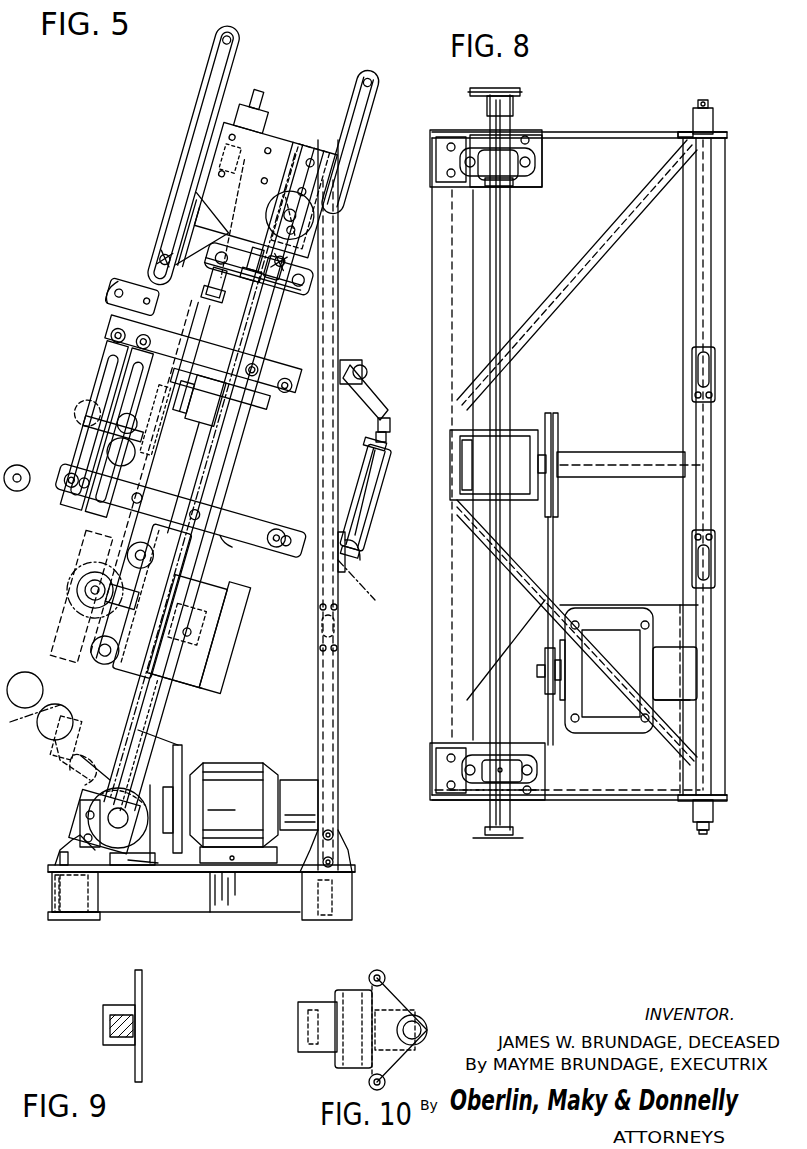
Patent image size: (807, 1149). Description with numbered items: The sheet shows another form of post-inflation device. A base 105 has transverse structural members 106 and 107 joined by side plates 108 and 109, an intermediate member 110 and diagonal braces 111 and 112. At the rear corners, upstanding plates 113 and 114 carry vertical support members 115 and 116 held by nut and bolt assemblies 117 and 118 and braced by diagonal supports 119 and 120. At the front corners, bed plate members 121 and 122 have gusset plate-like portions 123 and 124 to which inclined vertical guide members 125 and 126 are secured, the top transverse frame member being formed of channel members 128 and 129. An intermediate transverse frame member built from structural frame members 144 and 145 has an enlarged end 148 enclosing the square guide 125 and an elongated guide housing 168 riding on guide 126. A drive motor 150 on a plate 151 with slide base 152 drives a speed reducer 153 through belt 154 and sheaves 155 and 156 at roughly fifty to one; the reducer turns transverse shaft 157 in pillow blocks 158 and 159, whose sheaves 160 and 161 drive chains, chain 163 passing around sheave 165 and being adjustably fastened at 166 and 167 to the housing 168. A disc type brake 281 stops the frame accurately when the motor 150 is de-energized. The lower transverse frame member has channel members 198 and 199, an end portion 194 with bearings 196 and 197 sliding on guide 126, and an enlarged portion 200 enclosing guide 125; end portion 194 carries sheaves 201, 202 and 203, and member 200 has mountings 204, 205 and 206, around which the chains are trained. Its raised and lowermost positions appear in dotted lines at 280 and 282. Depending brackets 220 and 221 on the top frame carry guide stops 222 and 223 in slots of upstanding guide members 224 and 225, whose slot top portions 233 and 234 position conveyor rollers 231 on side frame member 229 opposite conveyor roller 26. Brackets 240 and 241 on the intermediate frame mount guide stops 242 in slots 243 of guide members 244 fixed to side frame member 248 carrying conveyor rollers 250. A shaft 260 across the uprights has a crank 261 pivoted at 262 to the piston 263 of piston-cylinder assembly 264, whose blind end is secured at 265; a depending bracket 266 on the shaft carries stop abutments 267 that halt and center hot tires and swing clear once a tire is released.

In FIG. 5, the conveyor roller 26 is at (22, 465).
In FIG. 5, the base 105 is at (213, 915).
In FIG. 5, the transverse structural member 106 is at (72, 900).
In FIG. 8, the transverse structural member 106 is at (450, 293).
In FIG. 5, the transverse structural member 107 is at (335, 897).
In FIG. 8, the transverse structural member 107 is at (705, 777).
In FIG. 8, the side plate 108 is at (612, 800).
In FIG. 8, the side plate 109 is at (598, 130).
In FIG. 8, the intermediate member 110 is at (603, 455).
In FIG. 8, the diagonal brace 111 is at (578, 272).
In FIG. 8, the diagonal brace 112 is at (545, 585).
In FIG. 8, the upstanding plate 113 is at (726, 135).
In FIG. 5, the upstanding plate 114 is at (345, 878).
In FIG. 8, the upstanding plate 114 is at (723, 798).
In FIG. 8, the upstanding vertical support member 115 is at (692, 120).
In FIG. 8, the upstanding vertical support member 116 is at (695, 820).
In FIG. 8, the nut and bolt assembly 117 is at (704, 108).
In FIG. 5, the nut and bolt assembly 118 is at (337, 860).
In FIG. 8, the nut and bolt assembly 118 is at (703, 840).
In FIG. 8, the diagonal support 119 is at (712, 307).
In FIG. 5, the diagonal support 120 is at (330, 733).
In FIG. 8, the diagonal support 120 is at (705, 657).
In FIG. 8, the bed plate member 121 is at (524, 135).
In FIG. 8, the bed plate member 122 is at (515, 800).
In FIG. 8, the gusset plate-like portion 123 is at (442, 135).
In FIG. 5, the gusset plate-like portion 124 is at (70, 848).
In FIG. 8, the gusset plate-like portion 124 is at (455, 802).
In FIG. 9, the inclined vertical guide member 125 is at (140, 1020).
In FIG. 5, the inclined vertical guide member 126 is at (168, 546).
In FIG. 5, the channel member 128 is at (222, 158).
In FIG. 5, the channel member 129 is at (308, 140).
In FIG. 5, the transversely extending structural frame member 144 is at (163, 288).
In FIG. 5, the transversely extending structural frame member 145 is at (300, 303).
In FIG. 9, the enlarged end portion 148 is at (110, 1045).
In FIG. 5, the drive motor 150 is at (240, 780).
In FIG. 8, the drive motor 150 is at (600, 712).
In FIG. 5, the plate 151 is at (287, 876).
In FIG. 8, the plate 151 is at (672, 610).
In FIG. 8, the slide base 152 is at (625, 733).
In FIG. 5, the speed reducer 153 is at (95, 775).
In FIG. 8, the speed reducer 153 is at (510, 425).
In FIG. 8, the belt 154 is at (556, 551).
In FIG. 8, the sheave 155 is at (550, 696).
In FIG. 8, the sheave 156 is at (556, 445).
In FIG. 5, the transverse shaft 157 is at (115, 818).
In FIG. 8, the transverse shaft 157 is at (505, 223).
In FIG. 8, the pillow block 158 is at (532, 160).
In FIG. 5, the pillow block 159 is at (148, 850).
In FIG. 8, the pillow block 159 is at (525, 776).
In FIG. 8, the sheave 160 is at (508, 84).
In FIG. 5, the sheave 161 is at (133, 840).
In FIG. 8, the sheave 161 is at (512, 840).
In FIG. 5, the chain 163 is at (192, 700).
In FIG. 5, the sheave 165 is at (302, 228).
In FIG. 5, the adjustable securing point 166 is at (246, 283).
In FIG. 5, the adjustable securing point 167 is at (216, 393).
In FIG. 5, the elongated guide housing 168 is at (220, 292).
In FIG. 5, the end portion 194 is at (150, 603).
In FIG. 5, the bearing 196 is at (175, 580).
In FIG. 5, the bearing 197 is at (180, 667).
In FIG. 5, the transverse structural channel-shaped member 198 is at (92, 578).
In FIG. 10, the transverse structural channel-shaped member 198 is at (400, 1015).
In FIG. 5, the transverse structural channel-shaped member 199 is at (222, 645).
In FIG. 10, the transverse structural channel-shaped member 199 is at (300, 1040).
In FIG. 10, the enlarged portion 200 is at (345, 1068).
In FIG. 5, the sheave 201 is at (132, 540).
In FIG. 5, the sheave 202 is at (70, 600).
In FIG. 5, the sheave 203 is at (95, 655).
In FIG. 10, the sheave mounting 204 is at (381, 974).
In FIG. 10, the sheave mounting 205 is at (428, 1031).
In FIG. 10, the sheave mounting 206 is at (385, 1087).
In FIG. 5, the depending bracket 220 is at (205, 202).
In FIG. 5, the depending bracket 221 is at (322, 270).
In FIG. 5, the guide stop 222 is at (172, 240).
In FIG. 5, the guide stop 223 is at (325, 285).
In FIG. 5, the upstanding guide member 224 is at (238, 70).
In FIG. 5, the upstanding guide member 225 is at (362, 80).
In FIG. 5, the side frame member 229 is at (118, 270).
In FIG. 5, the conveyor rollers 231 is at (118, 300).
In FIG. 5, the top portion of slot 233 is at (225, 44).
In FIG. 5, the top portion of slot 234 is at (374, 80).
In FIG. 5, the bracket 240 is at (312, 385).
In FIG. 5, the bracket 241 is at (200, 402).
In FIG. 5, the guide stop 242 is at (118, 340).
In FIG. 5, the elongated slot 243 is at (102, 384).
In FIG. 5, the vertically extending guide member 244 is at (90, 434).
In FIG. 5, the conveyor side frame member 248 is at (70, 470).
In FIG. 5, the conveyor rollers 250 is at (60, 503).
In FIG. 5, the shaft 260 is at (366, 368).
In FIG. 5, the crank 261 is at (378, 400).
In FIG. 5, the pivotal connection 262 is at (386, 420).
In FIG. 5, the piston 263 is at (384, 443).
In FIG. 5, the piston-cylinder assembly 264 is at (378, 507).
In FIG. 5, the blind end attachment 265 is at (345, 560).
In FIG. 5, the depending bracket 266 is at (340, 455).
In FIG. 5, the stop abutment 267 is at (285, 525).
In FIG. 5, the dotted line position 280 is at (262, 572).
In FIG. 5, the disc type brake 281 is at (300, 800).
In FIG. 8, the disc type brake 281 is at (690, 694).
In FIG. 5, the dotted line position 282 is at (33, 728).